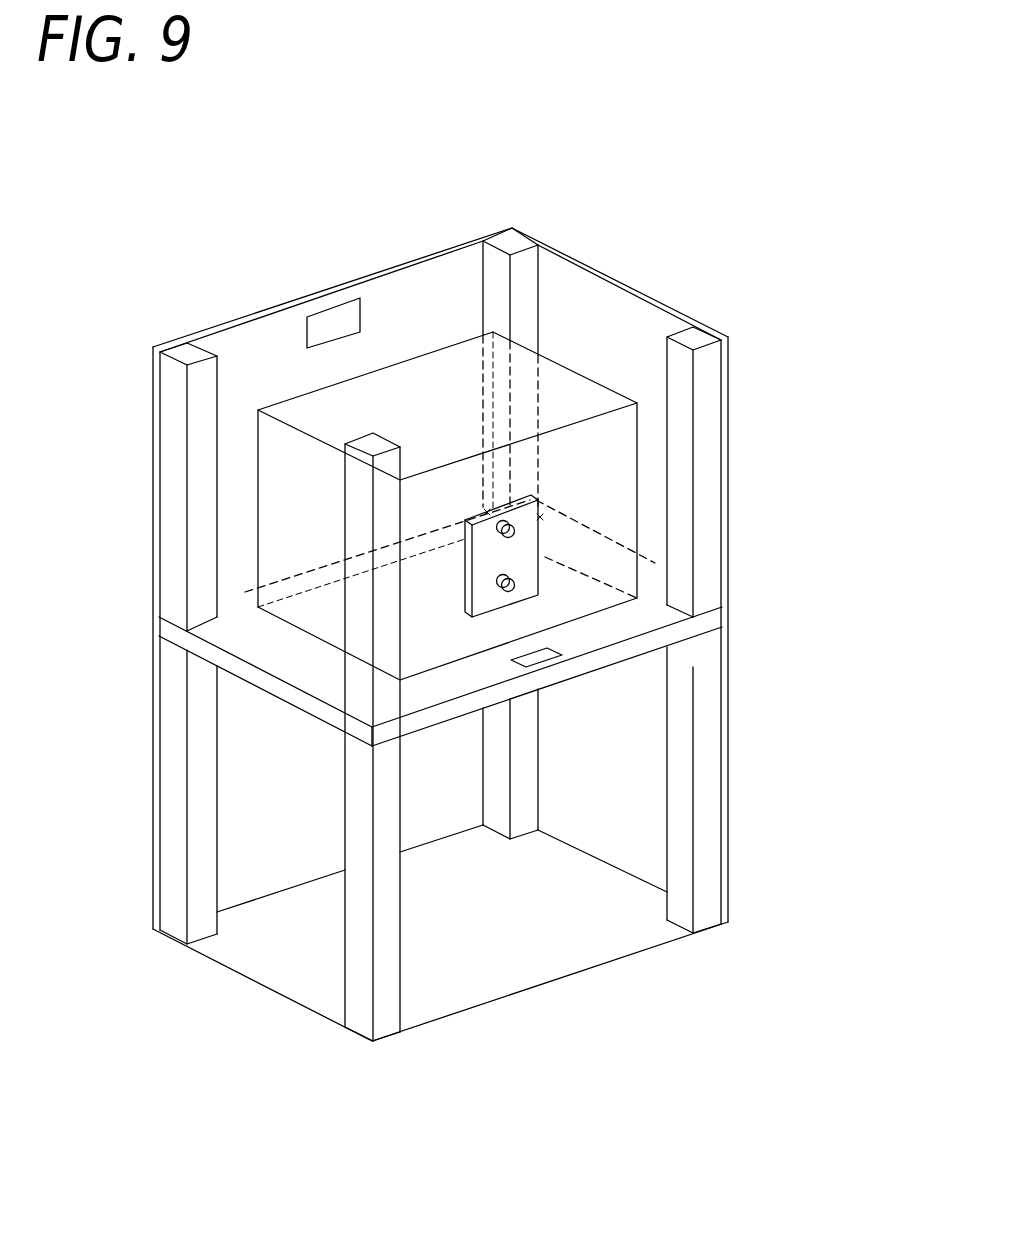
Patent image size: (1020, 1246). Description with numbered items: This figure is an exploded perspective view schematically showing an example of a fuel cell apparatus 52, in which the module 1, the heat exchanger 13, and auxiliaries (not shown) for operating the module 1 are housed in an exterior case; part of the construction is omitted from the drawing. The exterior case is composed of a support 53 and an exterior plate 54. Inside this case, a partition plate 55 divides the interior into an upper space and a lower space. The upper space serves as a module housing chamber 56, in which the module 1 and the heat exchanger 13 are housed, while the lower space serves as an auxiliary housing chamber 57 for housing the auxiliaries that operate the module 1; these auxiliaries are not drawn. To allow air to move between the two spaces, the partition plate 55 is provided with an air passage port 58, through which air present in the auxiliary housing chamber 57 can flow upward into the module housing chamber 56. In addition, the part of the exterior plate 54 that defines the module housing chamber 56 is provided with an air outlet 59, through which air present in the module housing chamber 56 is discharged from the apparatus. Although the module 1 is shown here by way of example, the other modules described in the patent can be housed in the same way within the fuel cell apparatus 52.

The module 1 is at (573, 388).
The heat exchanger 13 is at (525, 553).
The fuel cell apparatus 52 is at (378, 167).
The support 53 is at (183, 343).
The exterior plate 54 is at (562, 246).
The partition plate 55 is at (712, 612).
The module housing chamber 56 is at (585, 313).
The auxiliary housing chamber 57 is at (262, 793).
The air passage port 58 is at (548, 650).
The air outlet 59 is at (327, 320).